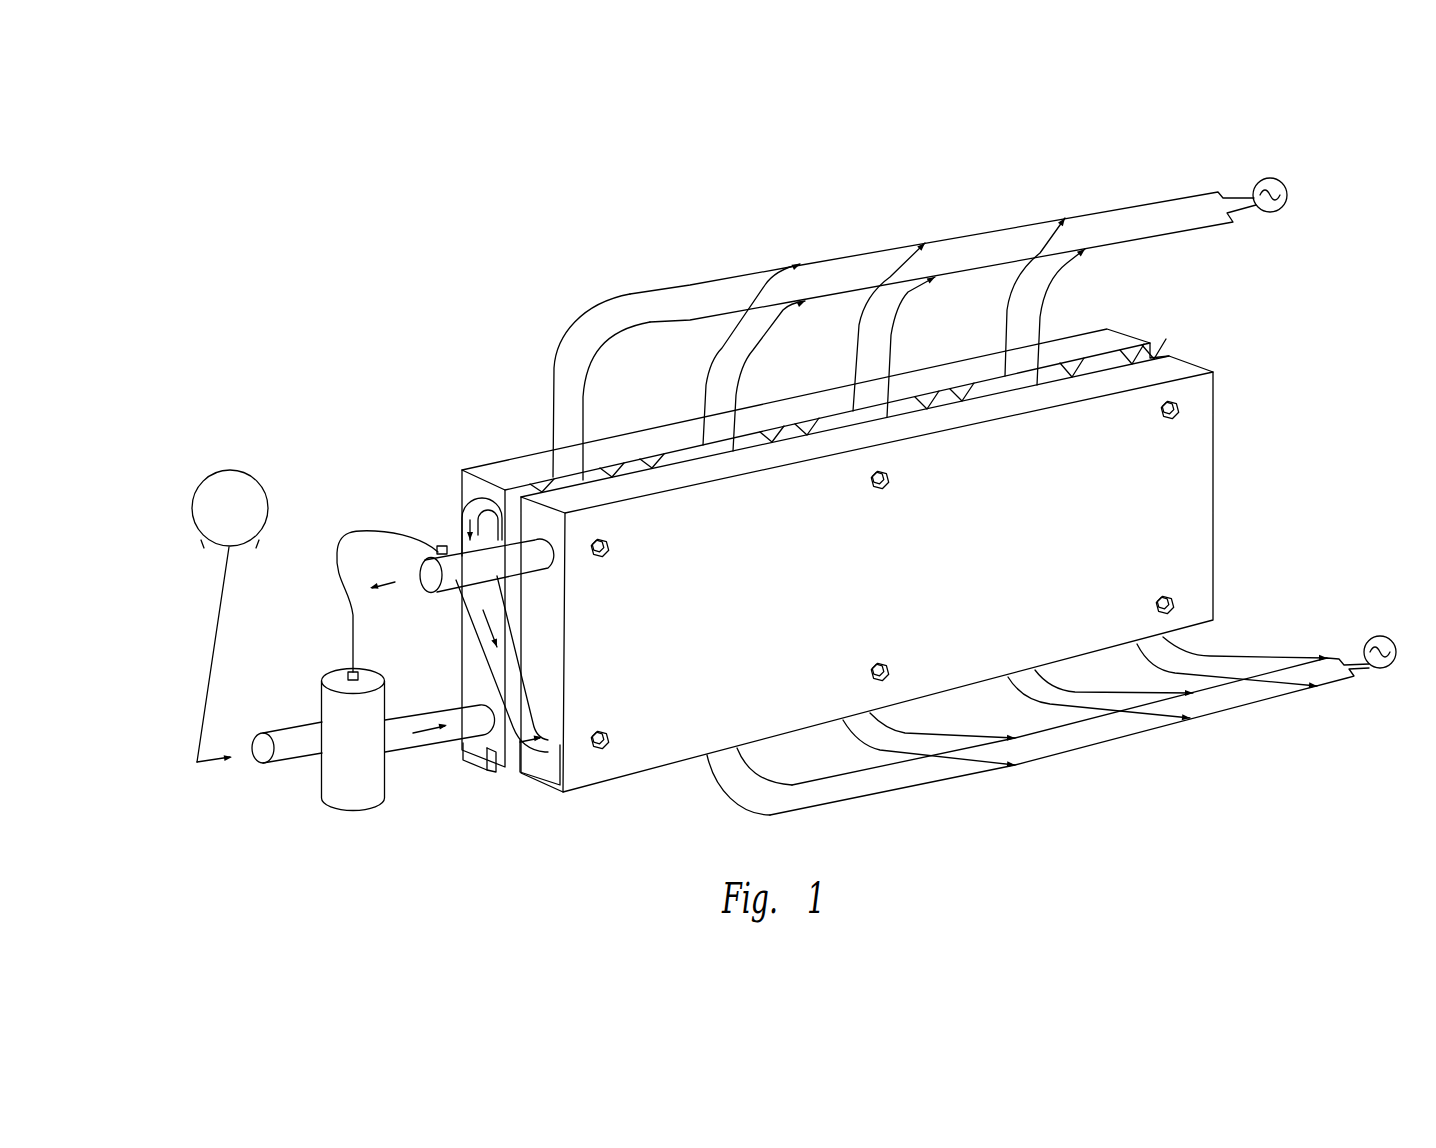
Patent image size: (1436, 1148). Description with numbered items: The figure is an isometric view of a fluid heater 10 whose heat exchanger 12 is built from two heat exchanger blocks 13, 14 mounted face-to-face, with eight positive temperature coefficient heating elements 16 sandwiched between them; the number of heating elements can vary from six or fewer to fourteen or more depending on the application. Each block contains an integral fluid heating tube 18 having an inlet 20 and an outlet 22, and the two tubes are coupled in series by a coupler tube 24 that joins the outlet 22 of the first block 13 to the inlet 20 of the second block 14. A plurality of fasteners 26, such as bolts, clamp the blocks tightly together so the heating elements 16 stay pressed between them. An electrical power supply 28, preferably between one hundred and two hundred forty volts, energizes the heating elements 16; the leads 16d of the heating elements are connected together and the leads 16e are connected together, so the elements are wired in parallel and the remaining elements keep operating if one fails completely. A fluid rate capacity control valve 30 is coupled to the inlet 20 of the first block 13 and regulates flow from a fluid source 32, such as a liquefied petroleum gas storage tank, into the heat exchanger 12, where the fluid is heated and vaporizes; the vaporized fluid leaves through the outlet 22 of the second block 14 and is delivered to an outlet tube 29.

The heater 10 is at (823, 190).
The heat exchanger 12 is at (1311, 428).
The first heat exchanger block 13 is at (1168, 368).
The second heat exchanger block 14 is at (500, 470).
The PTC heating element 16 is at (582, 486).
The leads 16d is at (567, 330).
The leads 16e is at (585, 405).
The fluid heating tube 18 is at (493, 772).
The inlet 20 is at (478, 757).
The outlet 22 is at (463, 505).
The coupler tube 24 is at (535, 660).
The fasteners 26 is at (609, 548).
The electrical power supply 28 is at (1284, 182).
The outlet tube 29 is at (458, 563).
The fluid rate capacity control valve 30 is at (320, 792).
The fluid source 32 is at (231, 468).